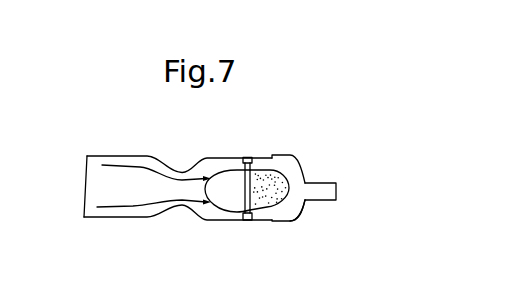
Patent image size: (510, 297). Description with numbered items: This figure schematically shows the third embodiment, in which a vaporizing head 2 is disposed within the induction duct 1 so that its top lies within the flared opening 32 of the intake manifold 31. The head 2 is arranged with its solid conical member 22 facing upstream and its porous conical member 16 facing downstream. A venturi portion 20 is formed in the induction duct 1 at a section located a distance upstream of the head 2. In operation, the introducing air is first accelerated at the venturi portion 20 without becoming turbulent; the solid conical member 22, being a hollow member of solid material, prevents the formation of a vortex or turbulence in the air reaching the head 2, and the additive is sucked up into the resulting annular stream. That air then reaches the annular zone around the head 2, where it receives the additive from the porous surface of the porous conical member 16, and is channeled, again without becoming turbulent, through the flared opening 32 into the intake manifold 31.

The induction duct 1 is at (118, 218).
The venturi portion 20 is at (181, 172).
The vaporizing head 2 is at (276, 172).
The intake manifold 31 is at (327, 183).
The flared opening 32 is at (287, 210).
The solid conical member 22 is at (231, 202).
The porous conical member 16 is at (270, 200).